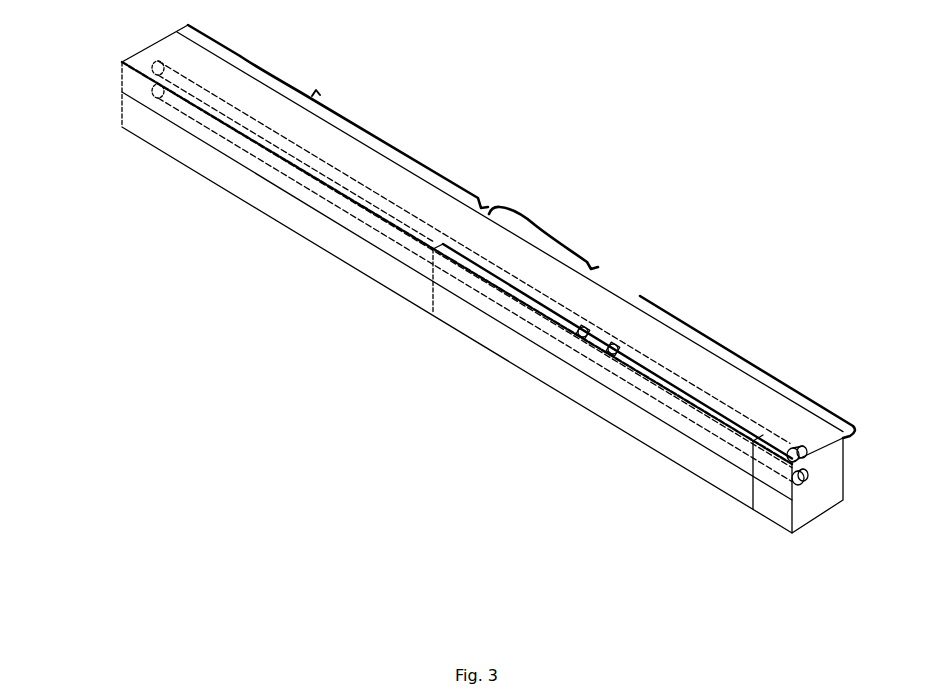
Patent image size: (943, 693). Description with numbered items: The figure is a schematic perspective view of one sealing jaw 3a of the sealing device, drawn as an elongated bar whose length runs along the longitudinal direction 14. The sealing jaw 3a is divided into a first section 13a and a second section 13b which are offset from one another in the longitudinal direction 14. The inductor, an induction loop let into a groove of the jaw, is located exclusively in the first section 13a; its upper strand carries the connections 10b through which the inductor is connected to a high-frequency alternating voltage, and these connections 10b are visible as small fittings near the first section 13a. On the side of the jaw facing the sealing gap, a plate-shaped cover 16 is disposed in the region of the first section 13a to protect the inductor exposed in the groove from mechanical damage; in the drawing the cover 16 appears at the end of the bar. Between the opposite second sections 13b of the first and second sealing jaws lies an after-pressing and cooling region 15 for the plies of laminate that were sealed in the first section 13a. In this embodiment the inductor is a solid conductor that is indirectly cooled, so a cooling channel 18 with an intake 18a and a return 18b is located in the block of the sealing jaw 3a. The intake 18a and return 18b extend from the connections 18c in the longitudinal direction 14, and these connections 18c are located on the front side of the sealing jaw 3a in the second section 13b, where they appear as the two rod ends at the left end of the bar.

The sealing jaw 3a is at (631, 118).
The connections 10b is at (614, 346).
The first section 13a is at (547, 238).
The second section 13b is at (338, 116).
The longitudinal direction 14 is at (530, 548).
The after-pressing and cooling region 15 is at (264, 176).
The cover 16 is at (730, 480).
The cooling channel 18 is at (495, 296).
The intake 18a is at (180, 105).
The return 18b is at (380, 198).
The connections 18c is at (153, 64).